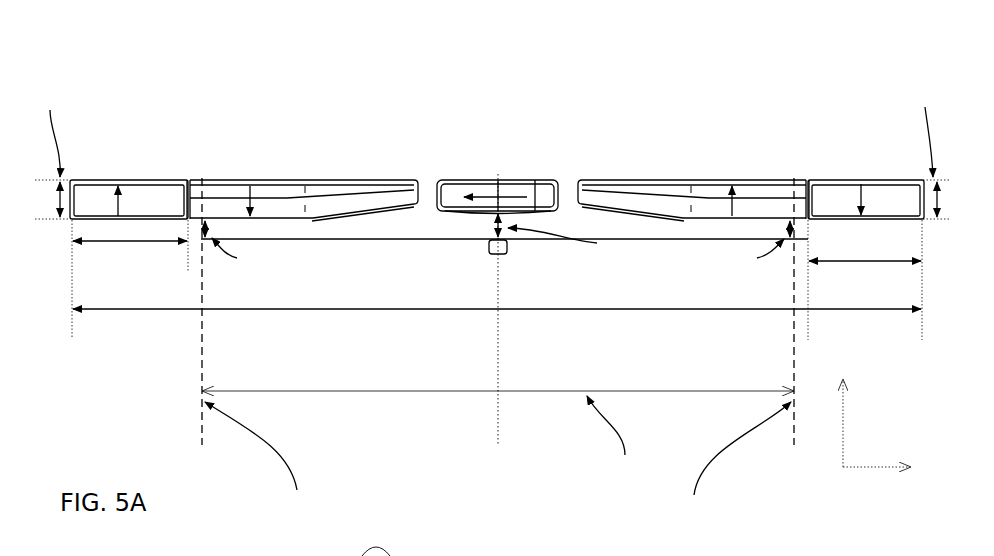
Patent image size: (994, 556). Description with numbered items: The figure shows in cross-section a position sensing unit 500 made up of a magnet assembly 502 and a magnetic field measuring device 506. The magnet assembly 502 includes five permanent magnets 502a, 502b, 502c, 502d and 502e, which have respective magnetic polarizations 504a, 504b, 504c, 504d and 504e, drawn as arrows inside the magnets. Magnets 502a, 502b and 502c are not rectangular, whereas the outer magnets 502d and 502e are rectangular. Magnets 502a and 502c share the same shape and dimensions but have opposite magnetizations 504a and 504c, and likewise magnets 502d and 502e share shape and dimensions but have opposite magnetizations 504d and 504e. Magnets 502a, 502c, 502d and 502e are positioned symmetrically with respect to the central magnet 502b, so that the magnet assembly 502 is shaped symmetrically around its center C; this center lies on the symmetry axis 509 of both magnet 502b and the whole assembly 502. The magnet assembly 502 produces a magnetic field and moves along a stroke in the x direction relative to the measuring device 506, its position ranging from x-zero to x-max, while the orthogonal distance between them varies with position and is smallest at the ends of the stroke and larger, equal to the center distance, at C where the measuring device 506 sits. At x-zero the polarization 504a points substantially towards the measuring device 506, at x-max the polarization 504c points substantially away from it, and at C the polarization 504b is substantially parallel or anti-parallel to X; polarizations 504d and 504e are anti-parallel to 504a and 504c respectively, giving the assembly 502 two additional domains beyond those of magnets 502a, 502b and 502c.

The position sensing unit 500 is at (143, 38).
The magnet assembly (MA) 502 is at (703, 88).
The permanent magnet 502a is at (254, 176).
The permanent magnet 502b is at (532, 176).
The permanent magnet 502c is at (751, 176).
The permanent magnet 502d is at (77, 176).
The permanent magnet 502e is at (829, 176).
The magnetic polarization 504a is at (259, 197).
The magnetic polarization 504b is at (477, 181).
The magnetic polarization 504c is at (717, 192).
The magnetic polarization 504d is at (118, 176).
The magnetic polarization 504e is at (867, 181).
The magnetic field measuring device (MFMD) 506 is at (511, 256).
The symmetry axis (SA) 509 is at (492, 414).